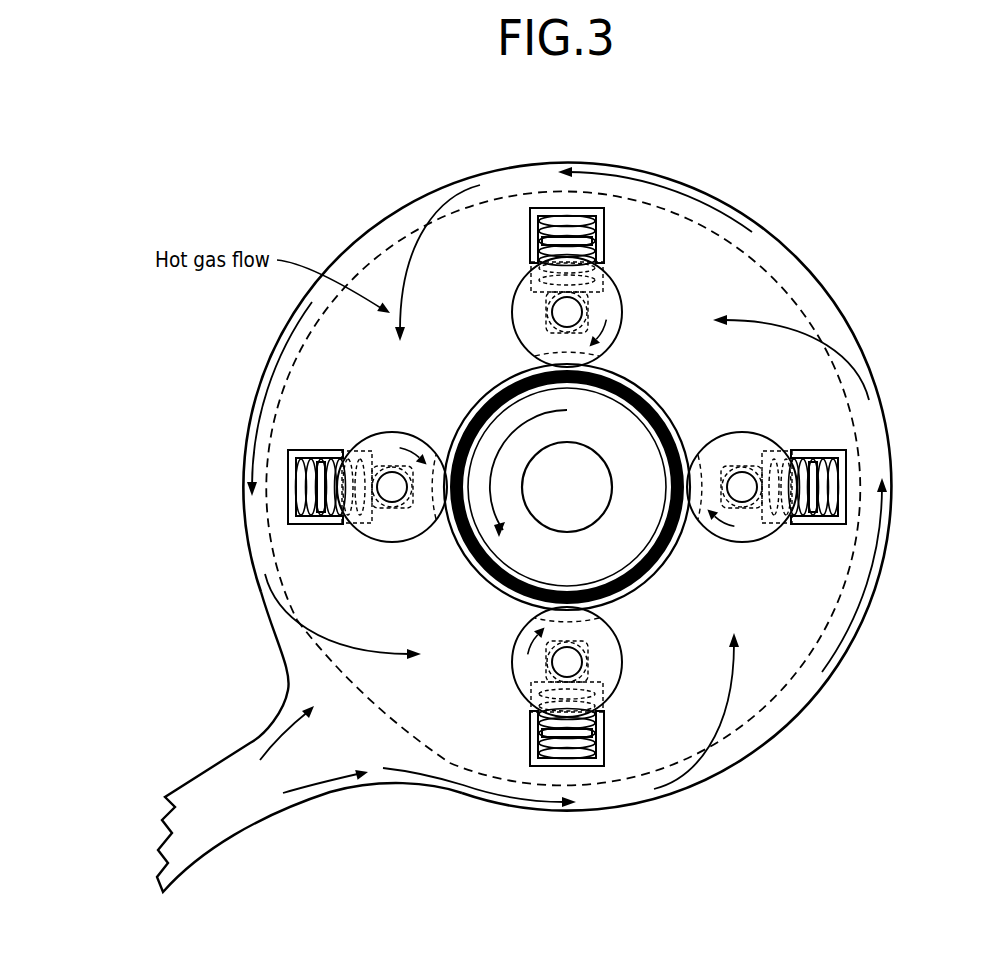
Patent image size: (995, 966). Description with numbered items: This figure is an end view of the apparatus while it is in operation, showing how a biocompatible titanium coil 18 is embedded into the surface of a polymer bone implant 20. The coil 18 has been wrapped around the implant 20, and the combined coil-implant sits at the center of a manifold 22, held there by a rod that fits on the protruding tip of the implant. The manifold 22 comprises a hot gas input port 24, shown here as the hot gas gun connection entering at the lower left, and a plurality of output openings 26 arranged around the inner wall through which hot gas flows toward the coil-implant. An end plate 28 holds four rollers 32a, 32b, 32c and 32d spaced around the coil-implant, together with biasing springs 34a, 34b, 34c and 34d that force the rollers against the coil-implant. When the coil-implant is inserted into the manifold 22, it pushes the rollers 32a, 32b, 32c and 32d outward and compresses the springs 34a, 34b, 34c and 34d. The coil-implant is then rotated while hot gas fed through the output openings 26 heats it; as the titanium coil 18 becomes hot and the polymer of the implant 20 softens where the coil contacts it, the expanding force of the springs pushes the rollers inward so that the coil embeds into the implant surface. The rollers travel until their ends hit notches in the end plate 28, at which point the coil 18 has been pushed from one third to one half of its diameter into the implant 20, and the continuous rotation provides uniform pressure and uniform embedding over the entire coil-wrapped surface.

The titanium coil 18 is at (660, 563).
The polymer bone implant 20 is at (582, 498).
The manifold 22 is at (810, 288).
The hot gas input port 24 is at (223, 833).
The output openings 26 is at (380, 241).
The end plate 28 is at (763, 693).
The roller 32a is at (742, 448).
The roller 32b is at (616, 663).
The roller 32c is at (402, 518).
The roller 32d is at (566, 314).
The spring 34a is at (834, 530).
The spring 34b is at (530, 758).
The spring 34c is at (303, 454).
The spring 34d is at (604, 216).